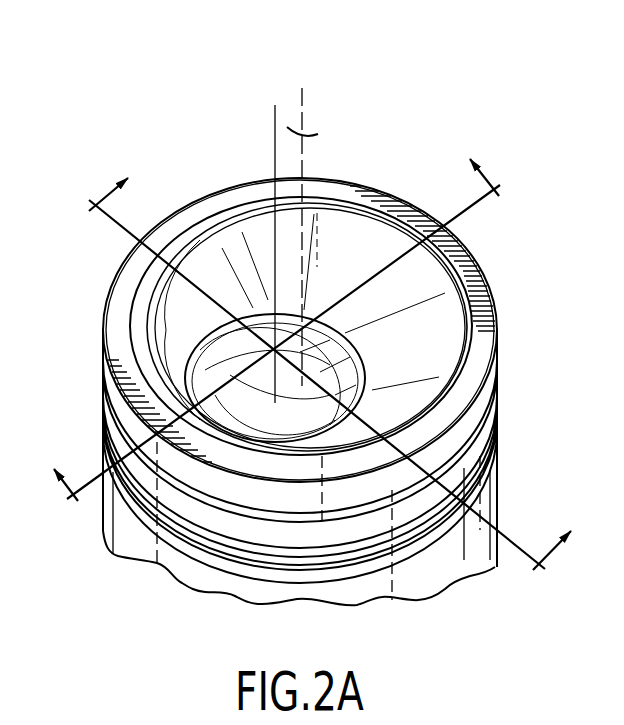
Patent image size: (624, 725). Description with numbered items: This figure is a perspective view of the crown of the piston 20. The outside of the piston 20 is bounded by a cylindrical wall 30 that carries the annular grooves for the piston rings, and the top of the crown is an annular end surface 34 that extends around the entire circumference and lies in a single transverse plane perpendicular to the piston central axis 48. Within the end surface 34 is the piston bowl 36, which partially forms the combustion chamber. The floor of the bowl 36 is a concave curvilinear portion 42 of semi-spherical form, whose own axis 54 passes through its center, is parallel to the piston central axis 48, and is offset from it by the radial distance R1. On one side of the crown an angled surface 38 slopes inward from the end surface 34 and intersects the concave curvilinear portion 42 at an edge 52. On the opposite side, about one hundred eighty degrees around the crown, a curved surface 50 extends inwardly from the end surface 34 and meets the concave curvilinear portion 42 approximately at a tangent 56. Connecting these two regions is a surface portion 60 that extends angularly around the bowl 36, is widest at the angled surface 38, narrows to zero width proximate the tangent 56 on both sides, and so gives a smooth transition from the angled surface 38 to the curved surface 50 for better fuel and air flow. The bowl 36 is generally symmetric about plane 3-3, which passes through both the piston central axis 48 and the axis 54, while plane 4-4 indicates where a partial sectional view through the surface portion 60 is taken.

The piston 20 is at (452, 104).
The cylindrical wall 30 is at (102, 366).
The end surface 34 is at (110, 318).
The piston bowl 36 is at (260, 242).
The angled surface 38 is at (375, 278).
The concave curvilinear portion 42 is at (260, 395).
The piston central axis 48 is at (308, 112).
The curved surface 50 is at (176, 406).
The edge 52 is at (337, 333).
The axis 54 is at (270, 140).
The tangent 56 is at (215, 390).
The surface portion 60 is at (247, 270).
The radial distance R1 is at (318, 131).
The plane 3- 3 is at (284, 348).
The plane 4- 4 is at (323, 390).